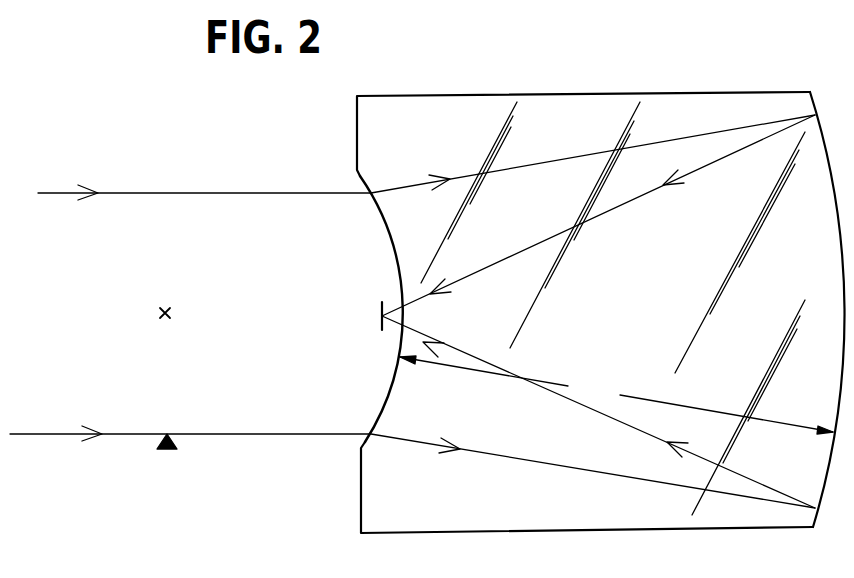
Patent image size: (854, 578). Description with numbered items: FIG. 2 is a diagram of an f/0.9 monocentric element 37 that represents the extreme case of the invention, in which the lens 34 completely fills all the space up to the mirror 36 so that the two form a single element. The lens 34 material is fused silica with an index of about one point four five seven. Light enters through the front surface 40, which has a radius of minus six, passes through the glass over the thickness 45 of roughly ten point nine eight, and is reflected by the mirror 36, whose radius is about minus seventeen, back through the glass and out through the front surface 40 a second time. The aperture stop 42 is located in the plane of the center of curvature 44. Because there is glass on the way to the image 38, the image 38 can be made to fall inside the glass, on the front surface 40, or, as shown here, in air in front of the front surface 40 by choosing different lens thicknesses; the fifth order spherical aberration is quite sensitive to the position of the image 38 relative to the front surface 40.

The lens 34 is at (659, 280).
The mirror 36 is at (840, 230).
The monocentric element 37 is at (736, 79).
The image 38 is at (382, 320).
The front surface 40 is at (383, 404).
The aperture stop 42 is at (163, 176).
The center of curvature 44 is at (172, 316).
The thickness 45 is at (616, 395).